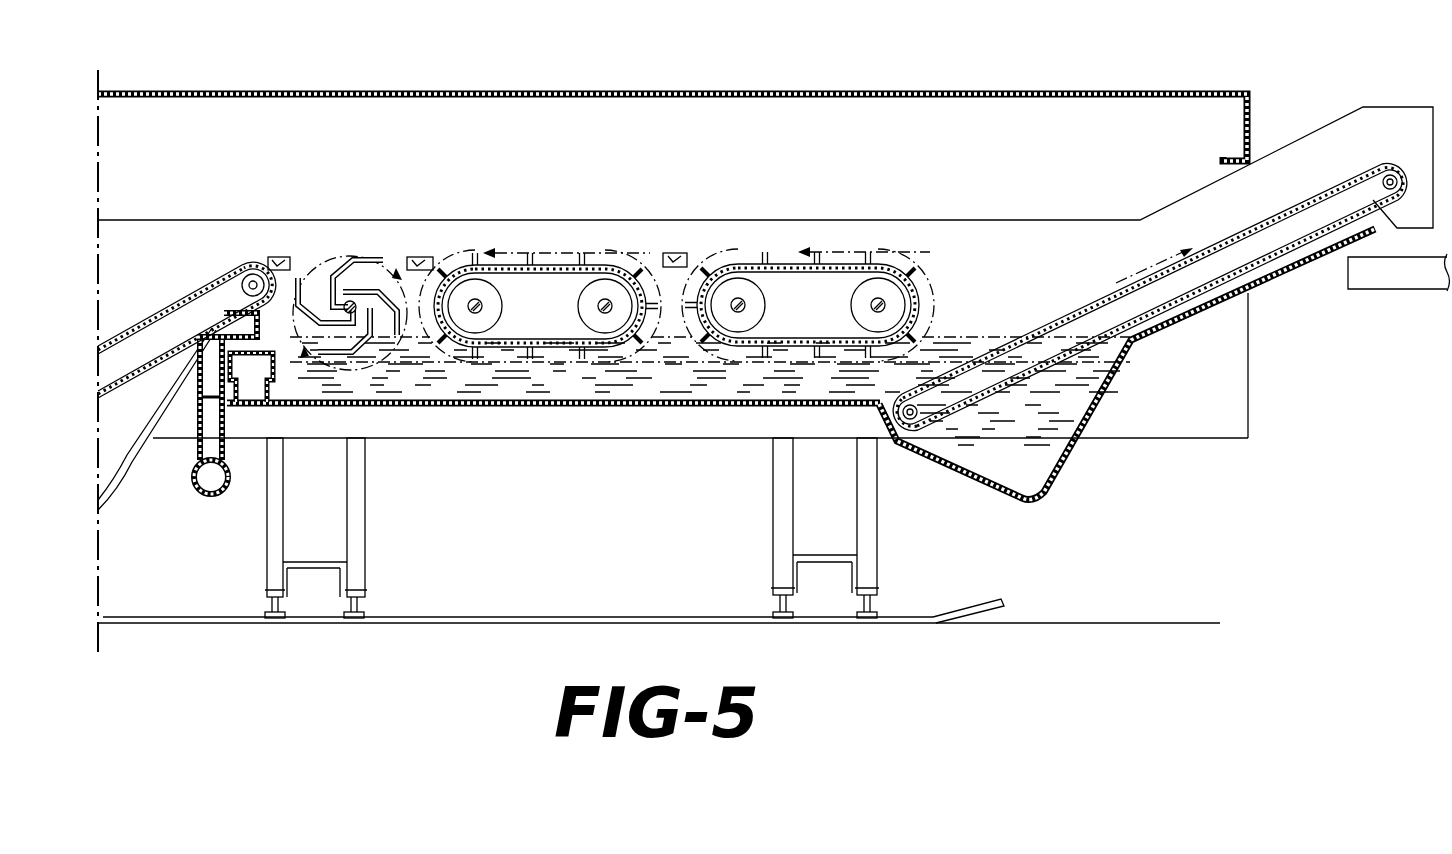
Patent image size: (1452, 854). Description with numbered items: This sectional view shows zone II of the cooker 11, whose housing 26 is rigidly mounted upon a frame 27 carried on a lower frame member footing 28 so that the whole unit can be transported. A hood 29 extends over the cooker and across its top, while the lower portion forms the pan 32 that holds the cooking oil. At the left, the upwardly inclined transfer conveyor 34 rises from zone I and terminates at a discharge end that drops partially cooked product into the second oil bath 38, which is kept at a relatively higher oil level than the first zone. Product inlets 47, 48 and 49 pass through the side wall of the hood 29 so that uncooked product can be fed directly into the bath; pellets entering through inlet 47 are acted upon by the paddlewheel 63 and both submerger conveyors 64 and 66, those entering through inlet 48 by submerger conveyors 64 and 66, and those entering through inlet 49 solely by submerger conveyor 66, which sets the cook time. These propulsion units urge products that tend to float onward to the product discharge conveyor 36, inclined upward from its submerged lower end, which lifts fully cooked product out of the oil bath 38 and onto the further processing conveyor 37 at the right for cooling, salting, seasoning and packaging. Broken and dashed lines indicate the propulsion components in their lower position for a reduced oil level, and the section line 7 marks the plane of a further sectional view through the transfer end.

The cooker 11 is at (963, 84).
The housing 26 is at (486, 449).
The frame 27 is at (365, 562).
The lower frame member footing 28 is at (965, 604).
The hood 29 is at (709, 90).
The pan 32 is at (748, 405).
The transfer conveyor 34 is at (172, 301).
The product discharge conveyor 36 is at (1281, 212).
The further processing conveyor 37 is at (1372, 290).
The oil bath 38 is at (685, 385).
The product inlet 47 is at (280, 257).
The product inlet 48 is at (427, 257).
The product inlet 49 is at (693, 253).
The paddlewheel 63 is at (363, 260).
The submerger conveyor 64 is at (562, 270).
The submerger conveyor 66 is at (868, 265).
The section line 7- 7 is at (190, 430).